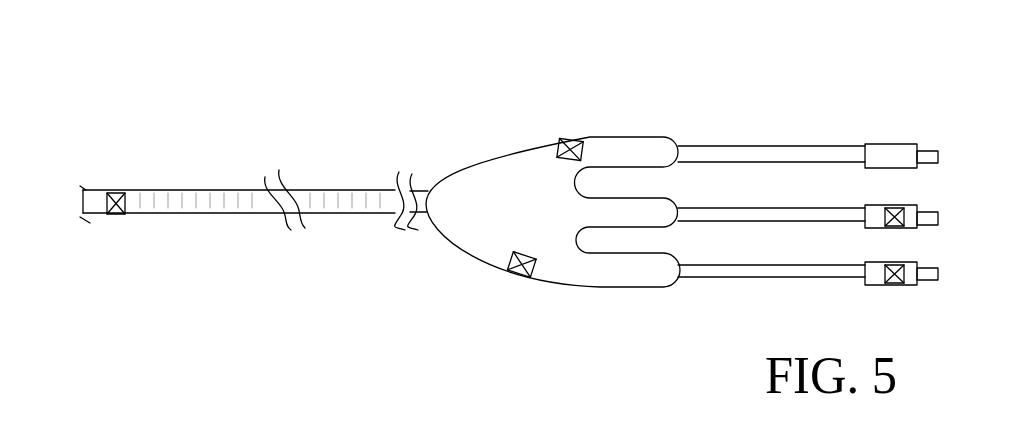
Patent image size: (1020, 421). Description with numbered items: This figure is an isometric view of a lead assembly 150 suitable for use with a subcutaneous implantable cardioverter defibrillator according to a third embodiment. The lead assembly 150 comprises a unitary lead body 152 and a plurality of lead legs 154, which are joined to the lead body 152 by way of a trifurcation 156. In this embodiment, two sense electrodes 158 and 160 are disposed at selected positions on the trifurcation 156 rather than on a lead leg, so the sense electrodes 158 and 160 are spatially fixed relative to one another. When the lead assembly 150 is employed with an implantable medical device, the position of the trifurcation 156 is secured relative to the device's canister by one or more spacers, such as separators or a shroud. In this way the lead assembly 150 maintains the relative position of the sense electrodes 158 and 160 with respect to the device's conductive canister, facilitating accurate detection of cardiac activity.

The lead assembly 150 is at (530, 84).
The unitary lead body 152 is at (140, 196).
The lead legs 154 is at (758, 155).
The trifurcation 156 is at (643, 147).
The sense electrode 158 is at (560, 143).
The sense electrode 160 is at (515, 276).